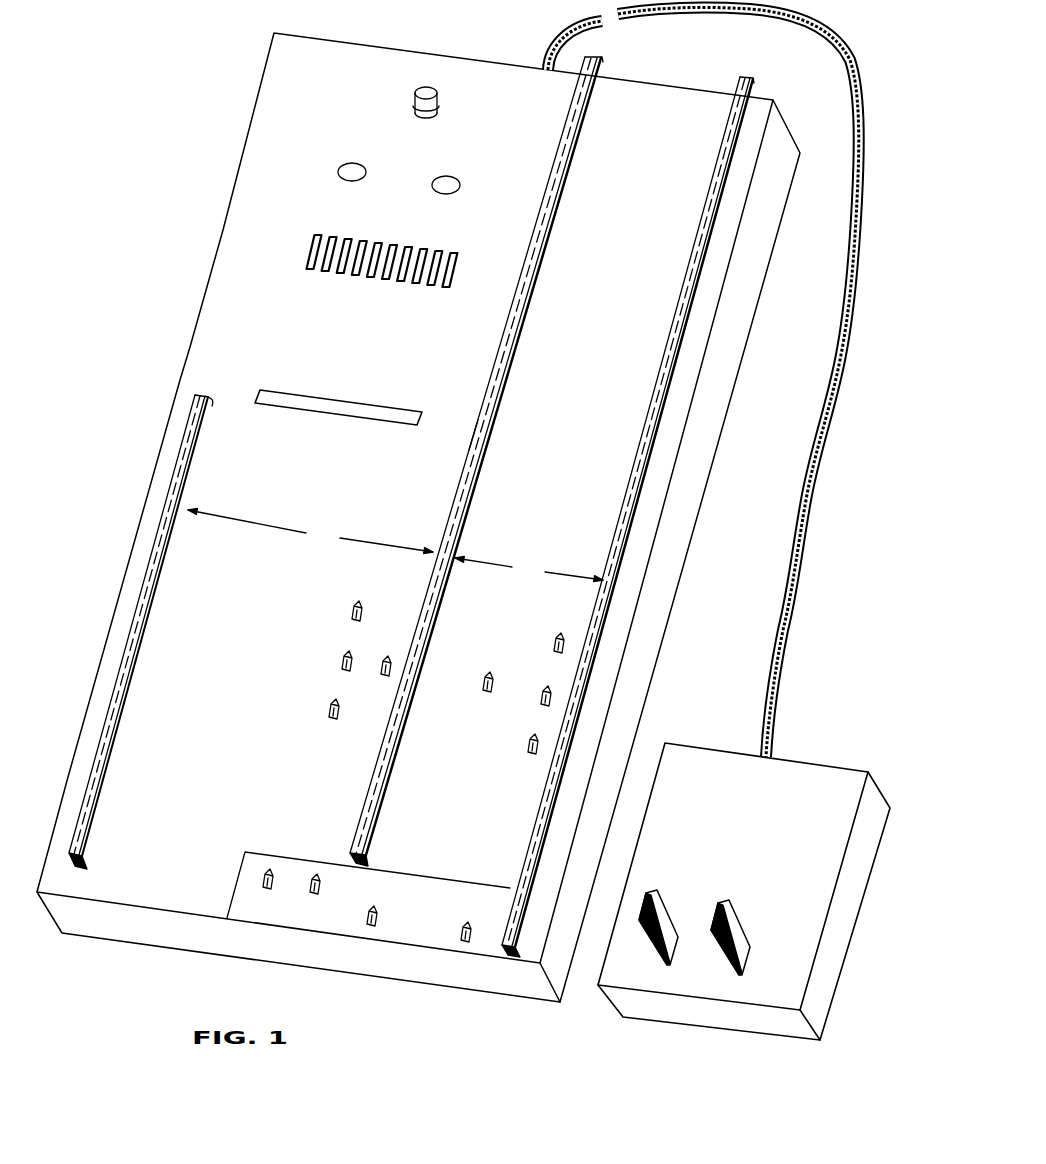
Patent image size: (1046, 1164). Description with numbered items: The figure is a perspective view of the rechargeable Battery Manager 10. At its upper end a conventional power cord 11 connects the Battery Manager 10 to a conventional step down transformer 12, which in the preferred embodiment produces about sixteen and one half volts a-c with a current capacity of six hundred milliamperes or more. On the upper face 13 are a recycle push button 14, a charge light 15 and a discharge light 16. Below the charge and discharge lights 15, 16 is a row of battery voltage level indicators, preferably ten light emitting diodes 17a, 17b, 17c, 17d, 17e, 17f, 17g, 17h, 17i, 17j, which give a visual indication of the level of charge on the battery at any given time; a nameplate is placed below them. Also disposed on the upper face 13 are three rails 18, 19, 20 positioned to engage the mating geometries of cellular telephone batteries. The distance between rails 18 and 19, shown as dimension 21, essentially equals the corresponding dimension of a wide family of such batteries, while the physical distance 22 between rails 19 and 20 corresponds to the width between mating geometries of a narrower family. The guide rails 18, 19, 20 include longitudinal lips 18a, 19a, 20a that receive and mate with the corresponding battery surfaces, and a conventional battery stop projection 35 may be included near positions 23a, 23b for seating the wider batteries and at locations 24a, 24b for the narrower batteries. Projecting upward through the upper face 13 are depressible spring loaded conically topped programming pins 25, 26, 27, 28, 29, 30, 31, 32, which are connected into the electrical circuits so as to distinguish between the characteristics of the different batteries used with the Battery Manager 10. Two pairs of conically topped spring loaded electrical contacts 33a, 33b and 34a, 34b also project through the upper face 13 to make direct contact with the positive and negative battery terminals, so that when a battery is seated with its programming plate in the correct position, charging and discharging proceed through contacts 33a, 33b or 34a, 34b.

The Battery Manager 10 is at (203, 247).
The power cord 11 is at (558, 33).
The step down transformer 12 is at (735, 765).
The upper face 13 is at (218, 312).
The recycle push button 14 is at (427, 105).
The charge light 15 is at (356, 176).
The discharge light 16 is at (448, 186).
The light emitting diode 17a is at (307, 258).
The light emitting diode 17b is at (351, 214).
The light emitting diode 17c is at (345, 278).
The light emitting diode 17d is at (363, 245).
The light emitting diode 17e is at (370, 278).
The light emitting diode 17f is at (393, 250).
The light emitting diode 17g is at (403, 282).
The light emitting diode 17h is at (424, 252).
The light emitting diode 17i is at (430, 288).
The light emitting diode 17j is at (458, 267).
The rail 18 is at (190, 471).
The longitudinal lip 18a is at (80, 856).
The rail 19 is at (485, 393).
The longitudinal lip 19a is at (367, 854).
The rail 20 is at (633, 466).
The longitudinal lip 20a is at (501, 948).
The dimension 21 is at (310, 531).
The physical distance 22 is at (529, 568).
The position 23a is at (208, 402).
The position 23b is at (469, 440).
The location 24a is at (601, 71).
The location 24b is at (740, 84).
The programming pin 25 is at (350, 610).
The programming pin 26 is at (340, 665).
The programming pin 27 is at (328, 710).
The programming pin 28 is at (383, 657).
The programming pin 29 is at (560, 637).
The programming pin 30 is at (483, 673).
The programming pin 31 is at (542, 693).
The programming pin 32 is at (525, 750).
The electrical contact 33a is at (270, 870).
The electrical contact 33b is at (317, 872).
The electrical contact 34a is at (378, 907).
The electrical contact 34b is at (475, 923).
The battery stop projection 35 is at (351, 408).